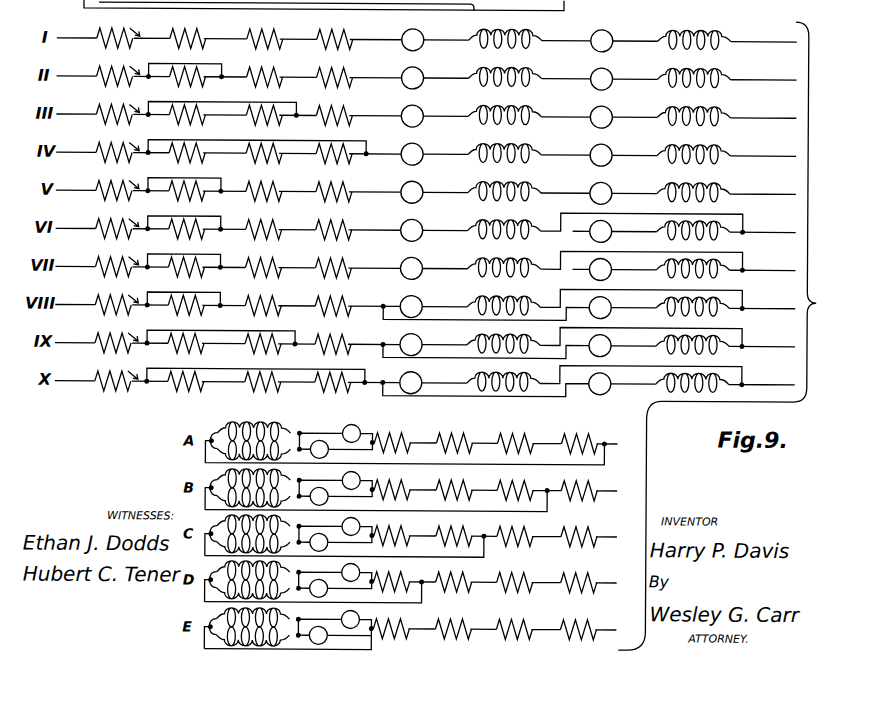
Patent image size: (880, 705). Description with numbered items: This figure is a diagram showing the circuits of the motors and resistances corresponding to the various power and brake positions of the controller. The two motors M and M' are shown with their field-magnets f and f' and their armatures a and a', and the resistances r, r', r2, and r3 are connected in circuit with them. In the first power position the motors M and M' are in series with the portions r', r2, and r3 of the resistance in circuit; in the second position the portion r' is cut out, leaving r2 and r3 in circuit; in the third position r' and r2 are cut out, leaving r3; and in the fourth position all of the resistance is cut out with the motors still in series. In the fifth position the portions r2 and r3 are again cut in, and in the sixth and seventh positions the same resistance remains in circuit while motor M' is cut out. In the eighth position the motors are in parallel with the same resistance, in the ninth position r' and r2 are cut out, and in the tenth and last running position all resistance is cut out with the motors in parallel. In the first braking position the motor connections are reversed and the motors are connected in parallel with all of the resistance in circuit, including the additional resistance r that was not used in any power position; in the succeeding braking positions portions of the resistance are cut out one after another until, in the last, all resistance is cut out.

The resistance r is at (347, 234).
The resistance r' is at (351, 234).
The resistance r2 is at (359, 234).
The resistance r3 is at (363, 234).
The armature a is at (382, 229).
The motor M is at (446, 29).
The field-magnet f is at (379, 229).
The armature a' is at (461, 237).
The motor M' is at (635, 28).
The field-magnet f' is at (474, 238).